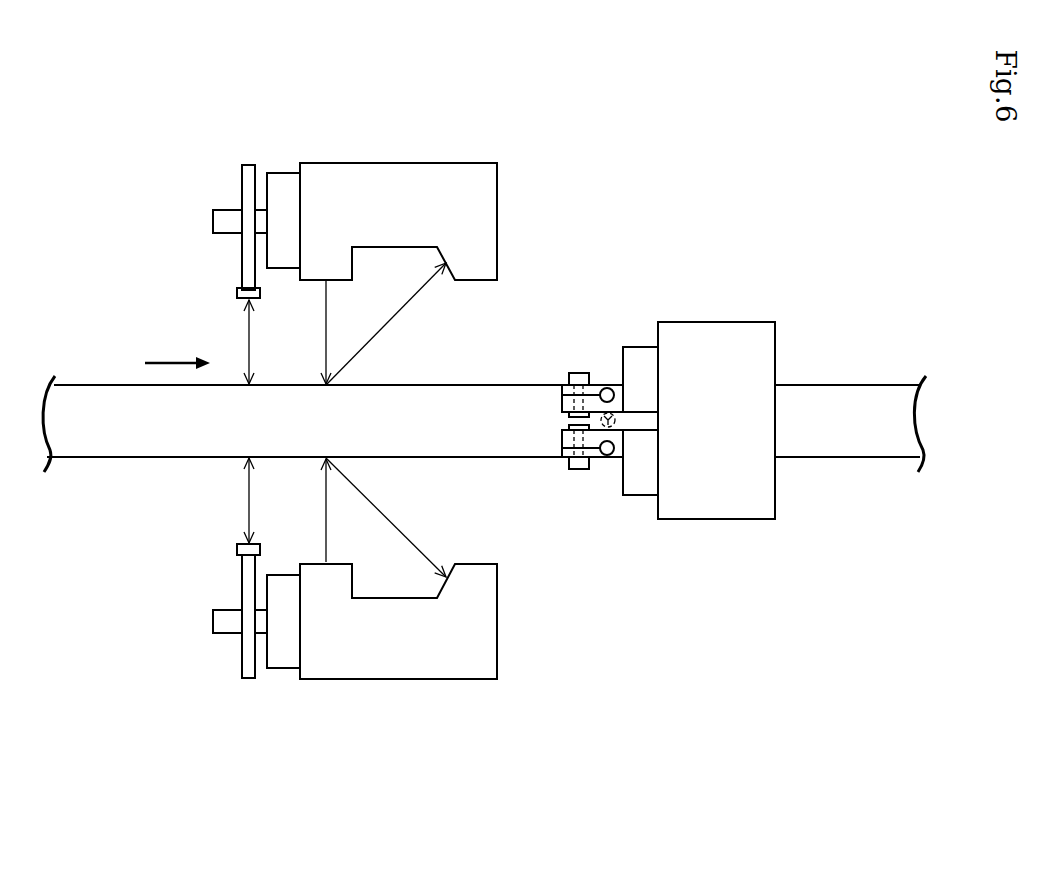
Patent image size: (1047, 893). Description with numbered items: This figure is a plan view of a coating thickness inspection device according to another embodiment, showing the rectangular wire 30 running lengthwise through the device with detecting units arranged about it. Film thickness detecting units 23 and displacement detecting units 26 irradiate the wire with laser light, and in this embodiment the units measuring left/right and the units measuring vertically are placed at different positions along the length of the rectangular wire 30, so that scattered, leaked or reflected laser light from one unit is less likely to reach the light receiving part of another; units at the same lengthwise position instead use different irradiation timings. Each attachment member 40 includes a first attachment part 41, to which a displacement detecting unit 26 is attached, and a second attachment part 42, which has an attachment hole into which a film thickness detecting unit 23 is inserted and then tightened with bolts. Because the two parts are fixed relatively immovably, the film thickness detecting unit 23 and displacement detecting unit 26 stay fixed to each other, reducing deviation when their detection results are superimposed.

The film thickness detecting unit 23 is at (243, 268).
The displacement detecting unit 26 is at (402, 172).
The rectangular wire 30 is at (108, 450).
The attachment member 40 is at (128, 103).
The first attachment part 41 is at (282, 180).
The second attachment part 42 is at (228, 215).